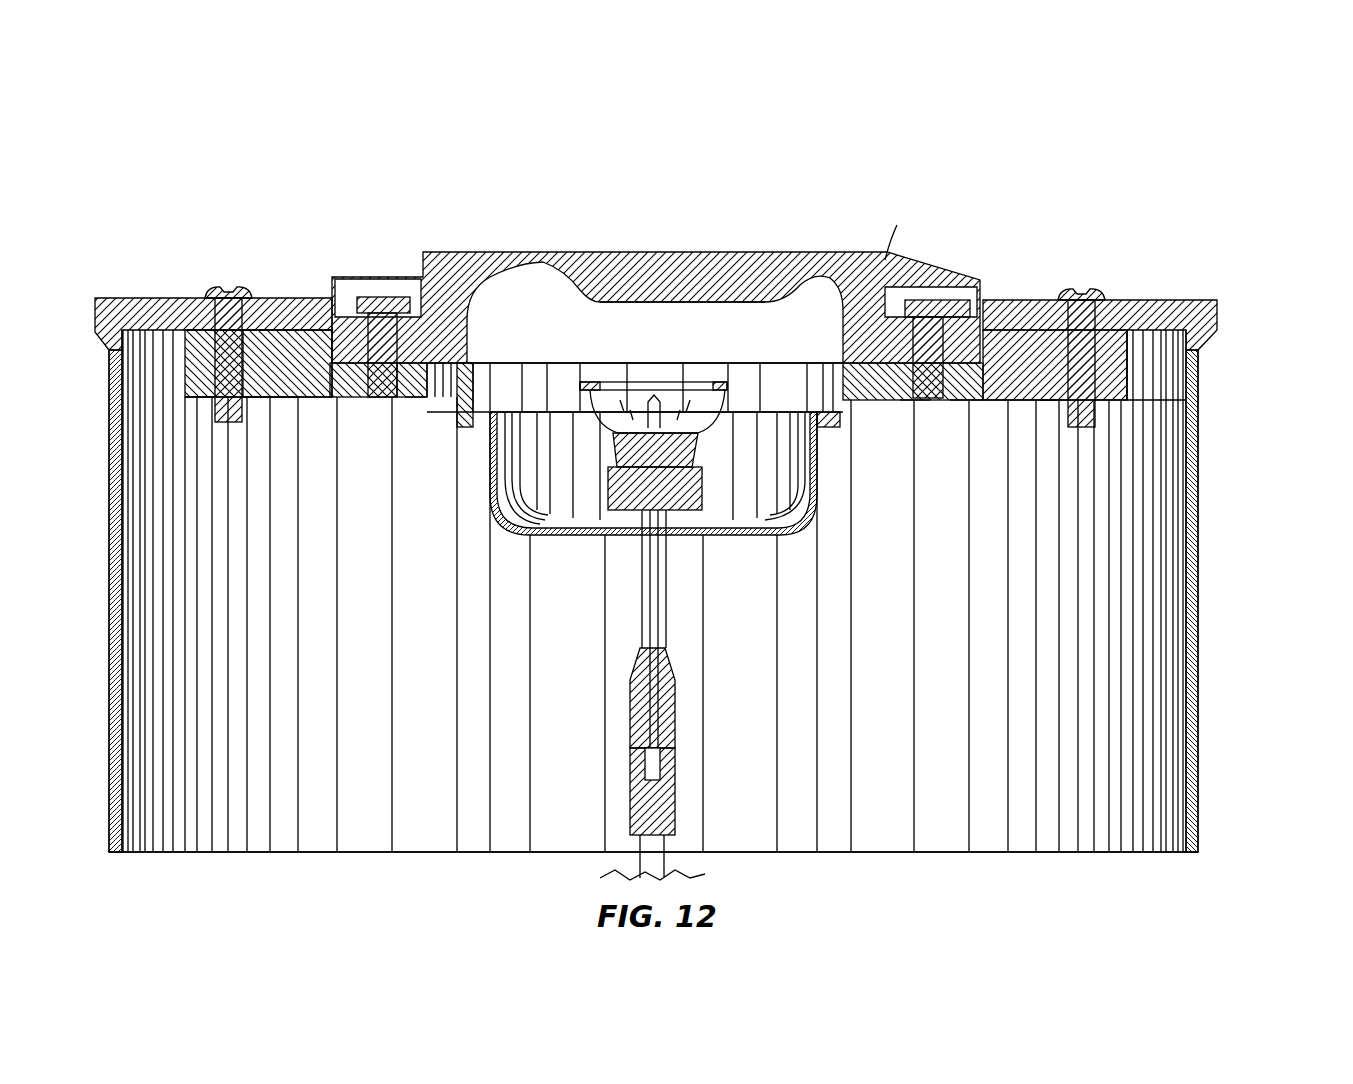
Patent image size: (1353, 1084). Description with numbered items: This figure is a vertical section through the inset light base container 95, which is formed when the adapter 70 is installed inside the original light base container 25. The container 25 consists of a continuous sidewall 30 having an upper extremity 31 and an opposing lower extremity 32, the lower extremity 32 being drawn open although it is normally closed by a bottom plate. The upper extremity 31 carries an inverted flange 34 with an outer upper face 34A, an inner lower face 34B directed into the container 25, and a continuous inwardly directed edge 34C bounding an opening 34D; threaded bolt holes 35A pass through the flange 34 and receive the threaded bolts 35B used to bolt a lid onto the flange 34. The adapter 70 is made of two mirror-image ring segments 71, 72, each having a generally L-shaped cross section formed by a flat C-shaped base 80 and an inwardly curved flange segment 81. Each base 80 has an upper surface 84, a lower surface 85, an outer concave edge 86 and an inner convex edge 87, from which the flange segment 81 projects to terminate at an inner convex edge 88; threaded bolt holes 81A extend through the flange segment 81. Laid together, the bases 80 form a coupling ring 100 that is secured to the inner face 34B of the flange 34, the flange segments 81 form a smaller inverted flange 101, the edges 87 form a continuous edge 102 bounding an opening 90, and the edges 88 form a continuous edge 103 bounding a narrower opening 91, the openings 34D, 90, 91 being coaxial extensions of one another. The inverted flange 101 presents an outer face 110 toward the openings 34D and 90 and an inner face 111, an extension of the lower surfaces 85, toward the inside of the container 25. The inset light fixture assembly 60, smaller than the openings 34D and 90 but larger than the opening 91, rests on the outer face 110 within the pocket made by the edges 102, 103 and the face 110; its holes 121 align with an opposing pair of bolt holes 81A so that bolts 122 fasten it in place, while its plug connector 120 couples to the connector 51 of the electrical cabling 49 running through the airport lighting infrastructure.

The light base container 25 is at (1212, 490).
The continuous sidewall 30 is at (1212, 575).
The upper extremity 31 is at (105, 298).
The lower extremity 32 is at (1198, 852).
The inverted flange 34 is at (177, 298).
The outer/upper face 34A is at (290, 326).
The inner/lower face 34B is at (193, 412).
The continuous inwardly directed edge 34C is at (345, 300).
The opening 34D is at (585, 300).
The threaded bolt holes 35A is at (1027, 400).
The threaded bolts 35B is at (247, 298).
The electrical cabling 49 is at (655, 862).
The electrical connector 51 is at (670, 790).
The inset light fixture assembly 60 is at (854, 243).
The adapter 70 is at (337, 421).
The ring segment 71 is at (195, 405).
The ring segment 72 is at (1133, 412).
The base 80 is at (275, 400).
The flange segment 81 is at (913, 400).
The threaded bolt holes 81A is at (410, 400).
The upper surface 84 is at (317, 300).
The lower surface 85 is at (283, 397).
The outer outwardly-curved concave edge 86 is at (1130, 380).
The inner inwardly-curved convex edge 87 is at (960, 300).
The inner inwardly-curved convex edge 88 is at (900, 223).
The opening 90 is at (850, 392).
The opening 91 is at (823, 420).
The inset light base container 95 is at (1231, 293).
The coupling ring 100 is at (267, 298).
The inverted flange 101 is at (427, 400).
The continuous inwardly directed edge 102 is at (963, 400).
The continuous inwardly directed edge 103 is at (470, 430).
The outer face 110 is at (415, 300).
The inner face 111 is at (408, 402).
The plug connector 120 is at (672, 705).
The holes 121 is at (440, 300).
The bolts 122 is at (400, 300).